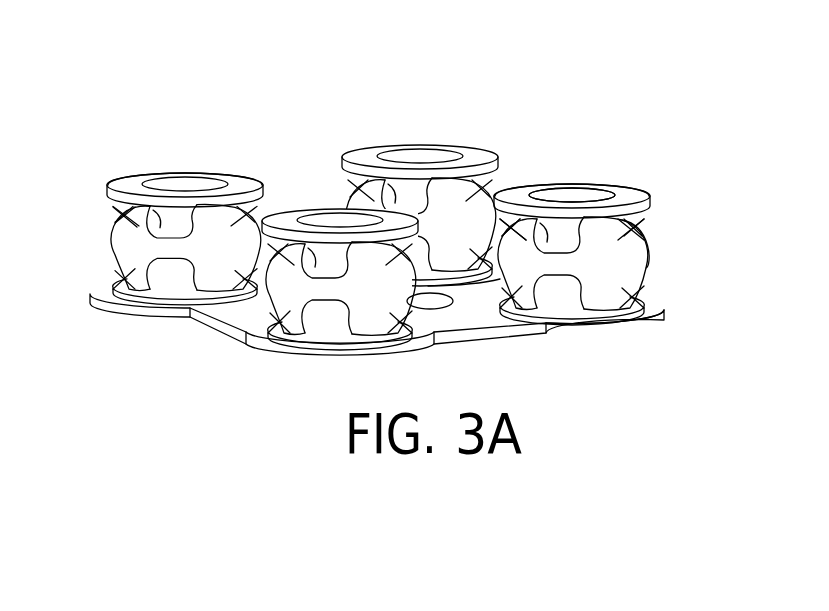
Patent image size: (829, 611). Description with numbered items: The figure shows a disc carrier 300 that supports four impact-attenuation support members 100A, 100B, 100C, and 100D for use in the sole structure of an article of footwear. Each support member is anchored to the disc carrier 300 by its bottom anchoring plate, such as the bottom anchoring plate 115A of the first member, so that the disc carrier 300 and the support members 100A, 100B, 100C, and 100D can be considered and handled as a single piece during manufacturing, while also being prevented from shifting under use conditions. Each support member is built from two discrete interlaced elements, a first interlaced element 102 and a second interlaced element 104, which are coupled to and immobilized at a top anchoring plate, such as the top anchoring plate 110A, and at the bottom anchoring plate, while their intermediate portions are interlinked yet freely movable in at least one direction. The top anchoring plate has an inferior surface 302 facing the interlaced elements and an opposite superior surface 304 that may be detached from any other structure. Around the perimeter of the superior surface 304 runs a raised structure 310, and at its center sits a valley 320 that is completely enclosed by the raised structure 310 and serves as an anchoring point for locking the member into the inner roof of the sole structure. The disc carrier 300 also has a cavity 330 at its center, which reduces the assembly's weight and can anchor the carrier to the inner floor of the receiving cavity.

The impact-attenuation support member 100A is at (613, 213).
The impact-attenuation support member 100B is at (410, 142).
The impact-attenuation support member 100C is at (293, 212).
The impact-attenuation support member 100D is at (157, 197).
The top anchoring plate 110A is at (523, 190).
The first interlaced element 102 is at (640, 222).
The second interlaced element 104 is at (640, 257).
The disc carrier 300 is at (381, 333).
The inferior surface 302 is at (117, 206).
The superior surface 304 is at (140, 177).
The raised structure 310 is at (637, 193).
The valley 320 is at (590, 194).
The cavity 330 is at (443, 306).
The bottom anchoring plate 115A is at (633, 322).